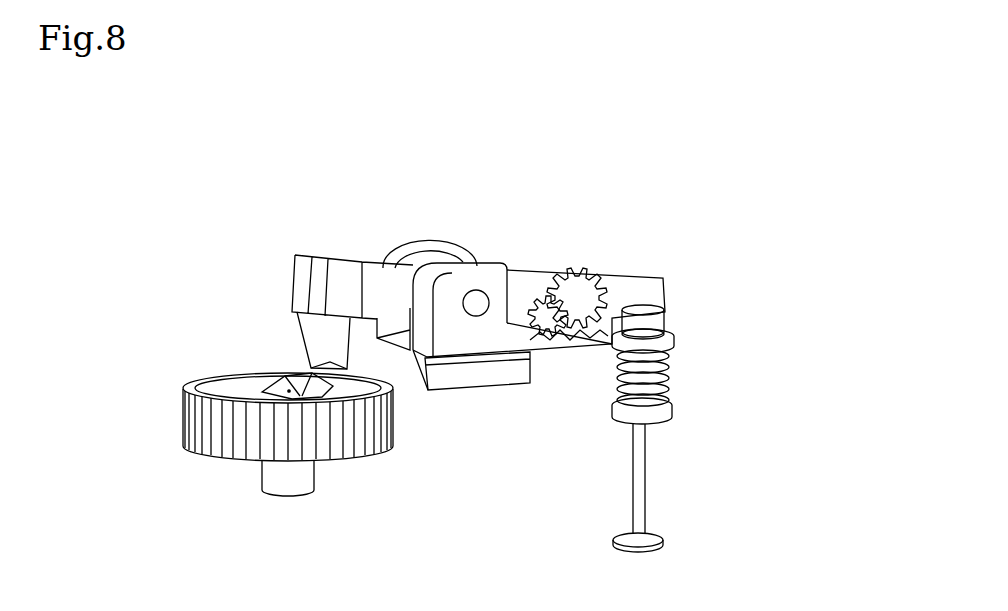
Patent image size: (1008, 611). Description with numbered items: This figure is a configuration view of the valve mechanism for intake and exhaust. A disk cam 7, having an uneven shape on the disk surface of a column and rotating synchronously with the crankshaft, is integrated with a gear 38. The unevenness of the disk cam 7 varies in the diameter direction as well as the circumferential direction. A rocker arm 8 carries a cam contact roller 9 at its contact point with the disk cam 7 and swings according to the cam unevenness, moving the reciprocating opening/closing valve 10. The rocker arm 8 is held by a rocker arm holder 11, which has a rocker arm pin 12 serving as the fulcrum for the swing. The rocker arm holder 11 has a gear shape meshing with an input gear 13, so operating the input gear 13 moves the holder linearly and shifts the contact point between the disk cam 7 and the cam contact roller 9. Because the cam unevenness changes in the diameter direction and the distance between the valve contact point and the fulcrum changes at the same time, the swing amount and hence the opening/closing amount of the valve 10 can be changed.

The disk cam 7 is at (290, 376).
The rocker arm 8 is at (300, 258).
The cam contact roller 9 is at (306, 364).
The reciprocating opening/closing valve 10 is at (667, 328).
The rocker arm holder 11 is at (482, 392).
The rocker arm pin 12 is at (481, 294).
The input gear 13 is at (588, 262).
The gear 38 is at (195, 447).